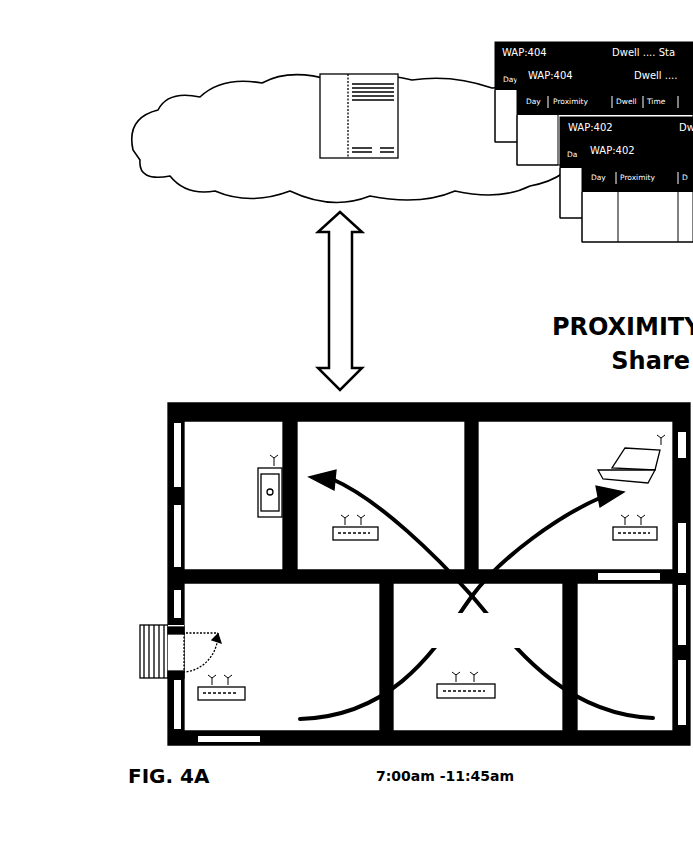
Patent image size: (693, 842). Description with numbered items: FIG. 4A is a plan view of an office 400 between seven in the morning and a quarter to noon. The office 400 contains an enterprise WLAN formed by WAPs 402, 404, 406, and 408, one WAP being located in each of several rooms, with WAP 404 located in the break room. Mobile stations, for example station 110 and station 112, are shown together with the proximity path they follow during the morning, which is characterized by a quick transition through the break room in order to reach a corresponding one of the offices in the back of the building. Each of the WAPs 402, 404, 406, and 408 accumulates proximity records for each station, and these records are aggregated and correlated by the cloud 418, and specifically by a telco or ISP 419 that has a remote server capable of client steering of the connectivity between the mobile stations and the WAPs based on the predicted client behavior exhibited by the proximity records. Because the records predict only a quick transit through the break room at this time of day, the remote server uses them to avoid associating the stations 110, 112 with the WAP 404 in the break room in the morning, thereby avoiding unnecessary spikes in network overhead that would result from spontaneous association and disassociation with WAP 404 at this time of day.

The office 400 is at (440, 401).
The WAP 402 is at (221, 699).
The WAP 404 is at (455, 700).
The WAP 406 is at (359, 538).
The WAP 408 is at (635, 538).
The station 110 is at (620, 455).
The station 112 is at (257, 482).
The cloud 418 is at (246, 196).
The ISP or Telco 419 is at (367, 75).